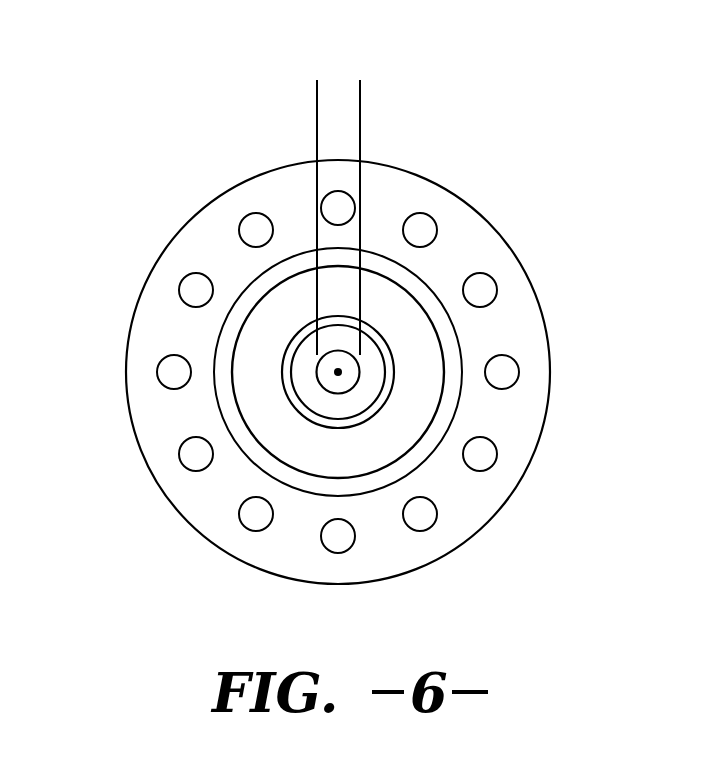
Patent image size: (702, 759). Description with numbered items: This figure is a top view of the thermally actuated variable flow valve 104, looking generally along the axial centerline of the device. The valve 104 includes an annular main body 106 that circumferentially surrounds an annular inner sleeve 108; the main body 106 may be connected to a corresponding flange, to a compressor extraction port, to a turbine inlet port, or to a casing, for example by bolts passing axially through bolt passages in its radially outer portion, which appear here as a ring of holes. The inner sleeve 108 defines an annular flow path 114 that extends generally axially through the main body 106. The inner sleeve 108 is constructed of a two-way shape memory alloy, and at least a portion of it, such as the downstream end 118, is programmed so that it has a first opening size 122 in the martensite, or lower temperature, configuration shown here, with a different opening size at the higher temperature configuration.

The variable flow valve 104 is at (140, 147).
The main body 106 is at (552, 348).
The inner sleeve 108 is at (302, 377).
The flow path 114 is at (340, 375).
The downstream end 118 is at (343, 369).
The first opening size 122 is at (265, 107).